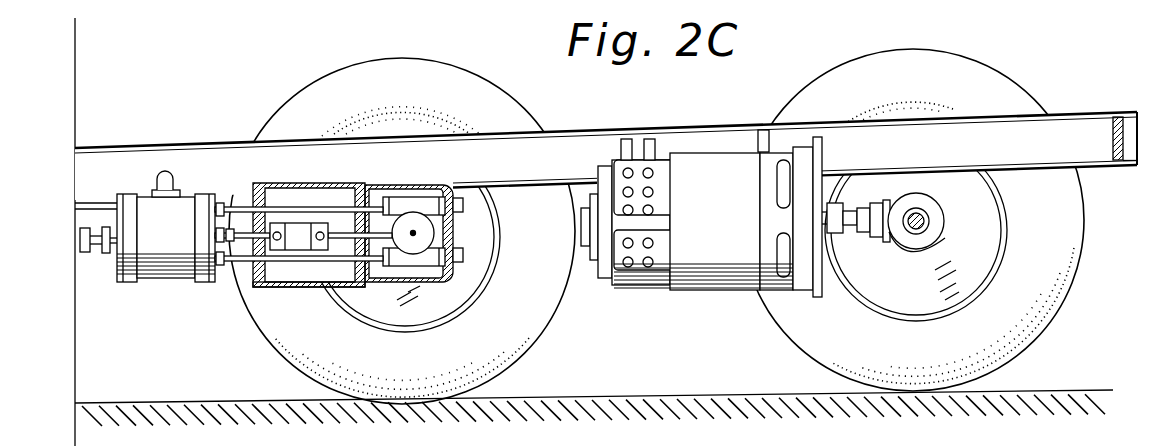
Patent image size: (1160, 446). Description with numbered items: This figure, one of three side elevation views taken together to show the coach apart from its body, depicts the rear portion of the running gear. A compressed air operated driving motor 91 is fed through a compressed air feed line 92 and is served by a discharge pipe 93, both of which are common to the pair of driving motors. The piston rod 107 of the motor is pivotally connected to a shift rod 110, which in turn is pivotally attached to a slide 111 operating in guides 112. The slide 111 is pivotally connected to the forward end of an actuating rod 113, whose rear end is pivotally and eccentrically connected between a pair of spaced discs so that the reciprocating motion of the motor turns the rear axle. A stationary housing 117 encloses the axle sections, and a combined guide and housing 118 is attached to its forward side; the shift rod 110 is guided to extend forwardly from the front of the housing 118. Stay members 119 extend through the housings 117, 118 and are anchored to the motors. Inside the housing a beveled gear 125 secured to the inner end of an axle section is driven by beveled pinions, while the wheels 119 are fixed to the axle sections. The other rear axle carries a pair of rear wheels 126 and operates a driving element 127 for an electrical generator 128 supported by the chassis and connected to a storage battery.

The compressed air operated driving motor 91 is at (157, 277).
The compressed air feed line 92 is at (95, 248).
The discharge pipe 93 is at (165, 172).
The piston rod 107 is at (226, 225).
The shift rod 110 is at (232, 260).
The slide 111 is at (297, 232).
The guides 112 is at (347, 245).
The actuating rod 113 is at (369, 237).
The stationary housing 117 is at (463, 238).
The combined guide and housing 118 is at (317, 286).
The stay members 119 is at (473, 90).
The beveled gear 125 is at (927, 232).
The rear wheels 126 is at (1007, 52).
The driving element 127 is at (907, 200).
The electrical generator 128 is at (713, 270).